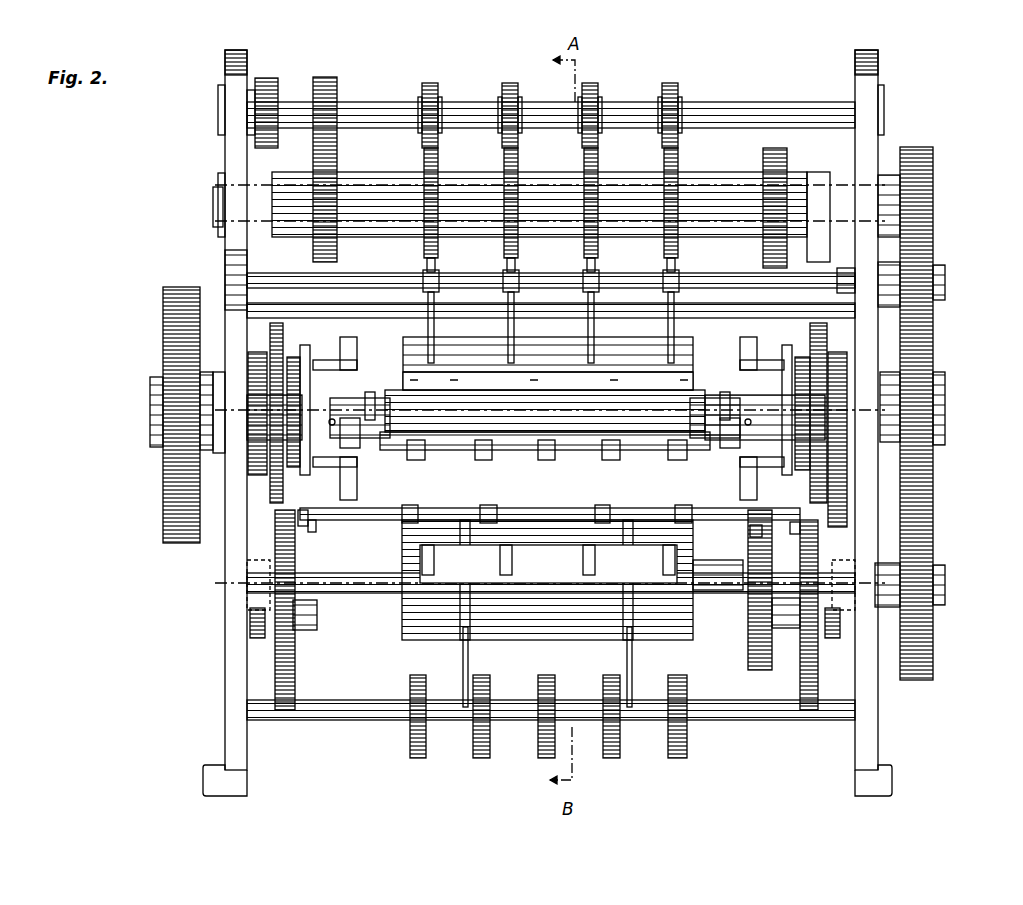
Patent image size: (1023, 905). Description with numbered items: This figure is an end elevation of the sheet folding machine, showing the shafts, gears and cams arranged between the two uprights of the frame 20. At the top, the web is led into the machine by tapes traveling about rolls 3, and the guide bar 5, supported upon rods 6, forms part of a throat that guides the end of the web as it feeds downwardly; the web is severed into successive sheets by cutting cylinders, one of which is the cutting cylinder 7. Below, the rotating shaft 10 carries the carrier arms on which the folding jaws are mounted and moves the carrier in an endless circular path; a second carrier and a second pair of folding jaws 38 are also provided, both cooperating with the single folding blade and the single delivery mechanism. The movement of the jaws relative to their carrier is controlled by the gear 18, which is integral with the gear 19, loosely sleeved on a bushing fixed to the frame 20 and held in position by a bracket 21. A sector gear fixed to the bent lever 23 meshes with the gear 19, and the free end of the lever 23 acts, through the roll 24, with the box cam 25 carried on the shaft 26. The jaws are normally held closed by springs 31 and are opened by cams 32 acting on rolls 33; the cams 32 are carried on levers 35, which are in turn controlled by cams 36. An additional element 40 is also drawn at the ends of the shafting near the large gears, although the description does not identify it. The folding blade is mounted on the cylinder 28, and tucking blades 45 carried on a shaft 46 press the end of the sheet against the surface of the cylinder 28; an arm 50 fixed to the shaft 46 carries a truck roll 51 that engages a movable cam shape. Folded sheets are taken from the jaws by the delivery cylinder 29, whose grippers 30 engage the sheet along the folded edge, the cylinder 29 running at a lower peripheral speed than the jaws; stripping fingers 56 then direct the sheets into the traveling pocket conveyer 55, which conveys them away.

The rolls 3 is at (506, 86).
The guide bar 5 is at (667, 334).
The rods 6 is at (405, 276).
The cutting cylinder 7 is at (508, 168).
The rotating shaft 10 is at (530, 415).
The gear 18 is at (280, 377).
The gear 19 is at (243, 380).
The frame 20 is at (867, 365).
The bracket 21 is at (561, 413).
The bent lever 23 is at (245, 622).
The roll 24 is at (270, 638).
The box cam 25 is at (297, 682).
The shaft 26 is at (722, 618).
The cylinder 28 is at (685, 358).
The cylinder 29 is at (400, 630).
The grippers 30 is at (587, 555).
The springs 31 is at (370, 392).
The cams 32 is at (352, 355).
The rolls 33 is at (348, 443).
The levers 35 is at (308, 345).
The cams 36 is at (812, 323).
The pair of folding jaws 38 is at (648, 440).
The shaft 40 is at (248, 447).
The tucking blades 45 is at (412, 508).
The shaft 46 is at (535, 510).
The arm 50 is at (302, 520).
The truck roll 51 is at (312, 532).
The traveling pocket conveyer 55 is at (490, 680).
The stripping fingers 56 is at (462, 668).